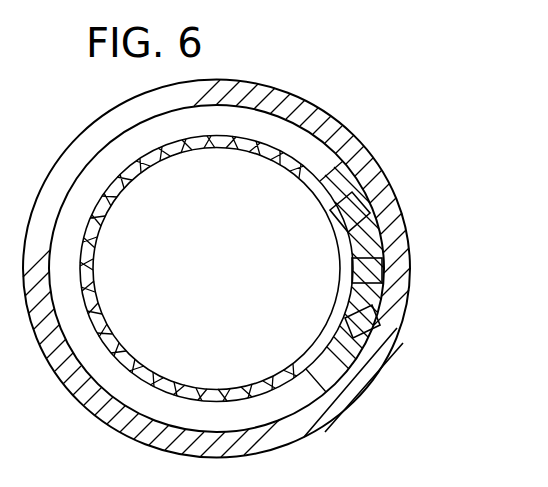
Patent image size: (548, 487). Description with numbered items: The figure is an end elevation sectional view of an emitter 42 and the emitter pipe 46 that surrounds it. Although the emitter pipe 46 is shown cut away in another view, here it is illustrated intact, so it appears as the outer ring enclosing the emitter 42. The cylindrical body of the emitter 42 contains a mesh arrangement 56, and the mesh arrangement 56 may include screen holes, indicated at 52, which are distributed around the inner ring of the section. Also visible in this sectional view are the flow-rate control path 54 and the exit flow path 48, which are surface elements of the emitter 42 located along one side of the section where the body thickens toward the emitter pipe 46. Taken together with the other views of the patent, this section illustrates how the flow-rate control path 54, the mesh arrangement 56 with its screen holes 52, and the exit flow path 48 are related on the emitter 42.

The emitter 42 is at (100, 403).
The emitter pipe 46 is at (334, 118).
The exit flow path 48 is at (380, 322).
The screen holes 52 is at (323, 197).
The flow-rate control path 54 is at (364, 205).
The mesh arrangement 56 is at (405, 252).